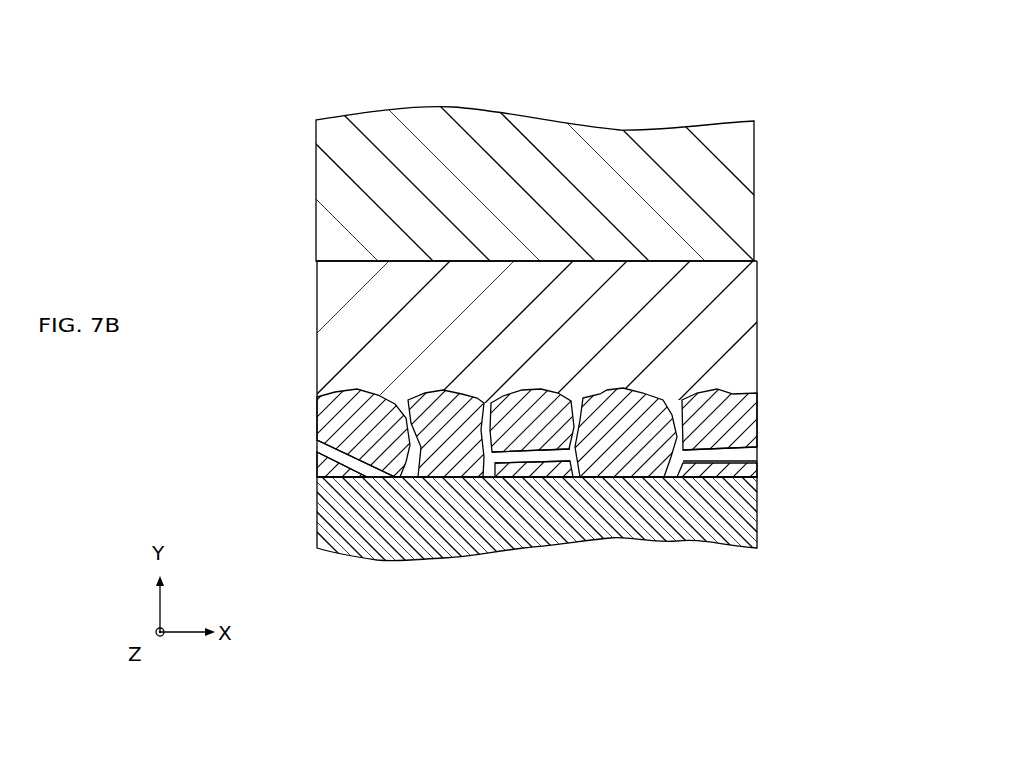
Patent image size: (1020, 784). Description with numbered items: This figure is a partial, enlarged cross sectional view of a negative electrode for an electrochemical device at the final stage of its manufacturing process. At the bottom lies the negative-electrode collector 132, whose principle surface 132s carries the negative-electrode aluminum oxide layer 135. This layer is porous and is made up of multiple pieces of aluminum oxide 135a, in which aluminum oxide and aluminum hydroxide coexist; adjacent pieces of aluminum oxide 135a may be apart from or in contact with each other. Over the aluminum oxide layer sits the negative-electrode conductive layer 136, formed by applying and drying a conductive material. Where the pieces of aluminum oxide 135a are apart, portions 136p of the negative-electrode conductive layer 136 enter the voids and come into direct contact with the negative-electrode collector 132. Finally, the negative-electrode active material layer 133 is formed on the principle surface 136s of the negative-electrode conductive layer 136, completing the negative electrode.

The negative-electrode collector 132 is at (757, 508).
The principle surface of the negative-electrode collector 132s is at (623, 470).
The negative-electrode active material layer 133 is at (753, 193).
The negative-electrode aluminum oxide layer 135 is at (535, 502).
The pieces of aluminum oxide 135a is at (414, 468).
The negative-electrode conductive layer 136 is at (747, 307).
The portion of the negative-electrode conductive layer 136p is at (482, 445).
The principle surface of the negative-electrode conductive layer 136s is at (480, 258).